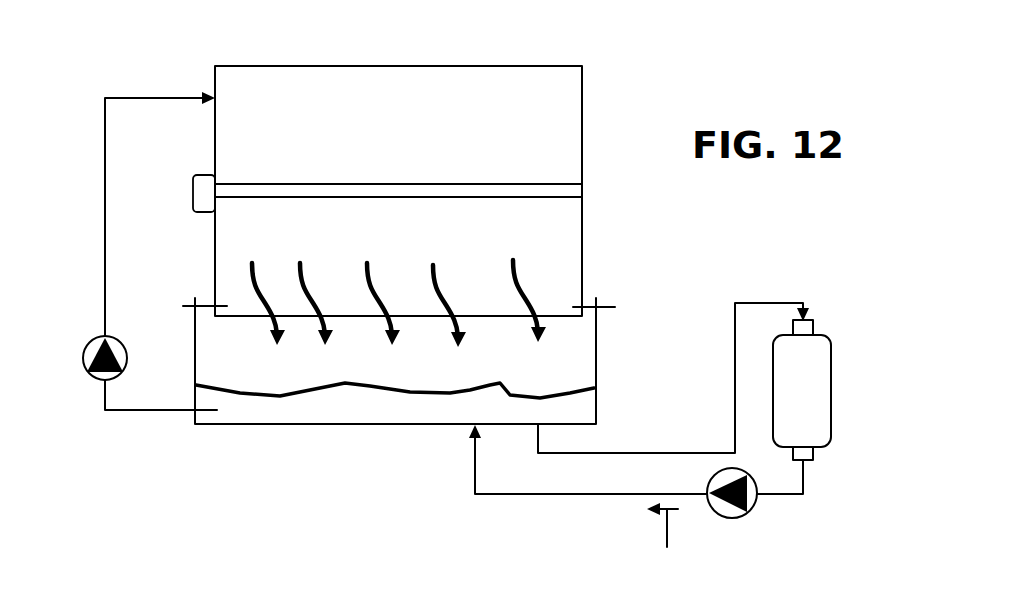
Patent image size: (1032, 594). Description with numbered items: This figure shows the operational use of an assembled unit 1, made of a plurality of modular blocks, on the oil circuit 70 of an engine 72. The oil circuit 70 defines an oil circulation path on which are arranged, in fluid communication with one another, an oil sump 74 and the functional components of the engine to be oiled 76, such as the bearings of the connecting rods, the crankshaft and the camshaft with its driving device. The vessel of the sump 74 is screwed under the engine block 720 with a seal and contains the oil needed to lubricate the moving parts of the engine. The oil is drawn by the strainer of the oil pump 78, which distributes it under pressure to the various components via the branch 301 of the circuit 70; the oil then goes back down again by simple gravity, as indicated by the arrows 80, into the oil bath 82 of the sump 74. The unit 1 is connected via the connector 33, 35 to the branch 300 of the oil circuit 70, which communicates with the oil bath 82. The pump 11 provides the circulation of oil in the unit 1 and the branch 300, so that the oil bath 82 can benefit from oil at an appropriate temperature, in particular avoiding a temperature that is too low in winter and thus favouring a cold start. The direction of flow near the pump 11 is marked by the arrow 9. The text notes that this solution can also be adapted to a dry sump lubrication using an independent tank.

The unit 1 is at (821, 288).
The fluid flow direction 9 is at (662, 539).
The pump 11 is at (745, 512).
The connector 33 is at (815, 325).
The connector 35 is at (815, 458).
The oil circuit 70 is at (92, 183).
The engine 72 is at (462, 78).
The oil sump 74 is at (600, 343).
The functional components of the engine to be oiled 76 is at (261, 172).
The oil pump 78 is at (97, 388).
The arrows 80 is at (308, 303).
The oil bath 82 is at (258, 408).
The branch 300 is at (537, 495).
The branch 301 is at (103, 320).
The engine block 720 is at (583, 222).